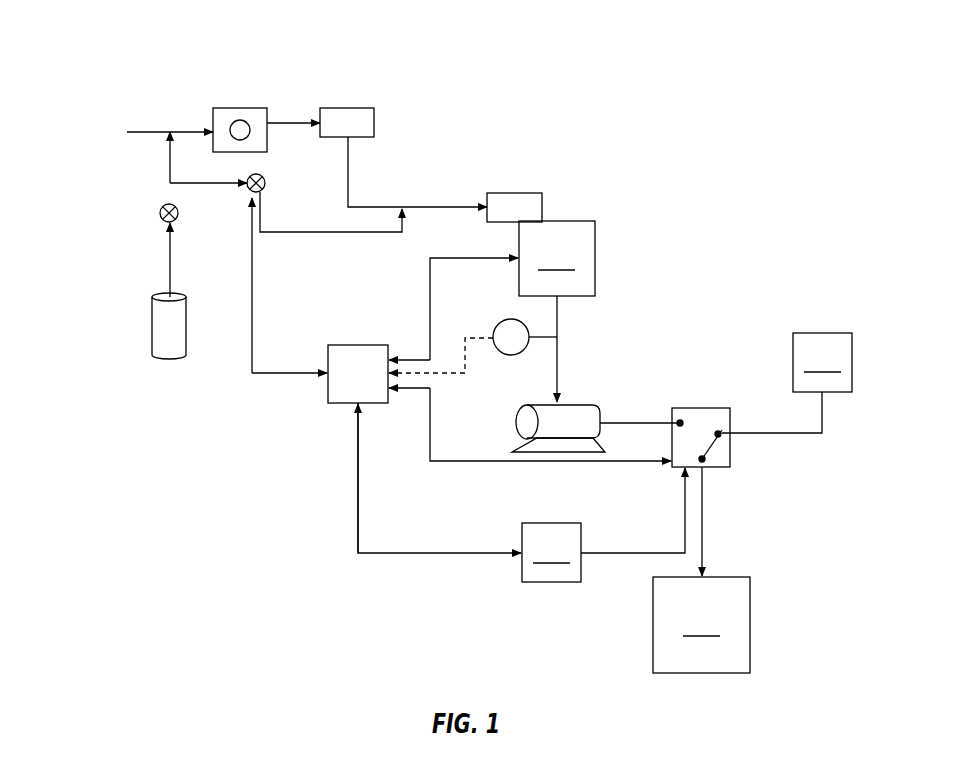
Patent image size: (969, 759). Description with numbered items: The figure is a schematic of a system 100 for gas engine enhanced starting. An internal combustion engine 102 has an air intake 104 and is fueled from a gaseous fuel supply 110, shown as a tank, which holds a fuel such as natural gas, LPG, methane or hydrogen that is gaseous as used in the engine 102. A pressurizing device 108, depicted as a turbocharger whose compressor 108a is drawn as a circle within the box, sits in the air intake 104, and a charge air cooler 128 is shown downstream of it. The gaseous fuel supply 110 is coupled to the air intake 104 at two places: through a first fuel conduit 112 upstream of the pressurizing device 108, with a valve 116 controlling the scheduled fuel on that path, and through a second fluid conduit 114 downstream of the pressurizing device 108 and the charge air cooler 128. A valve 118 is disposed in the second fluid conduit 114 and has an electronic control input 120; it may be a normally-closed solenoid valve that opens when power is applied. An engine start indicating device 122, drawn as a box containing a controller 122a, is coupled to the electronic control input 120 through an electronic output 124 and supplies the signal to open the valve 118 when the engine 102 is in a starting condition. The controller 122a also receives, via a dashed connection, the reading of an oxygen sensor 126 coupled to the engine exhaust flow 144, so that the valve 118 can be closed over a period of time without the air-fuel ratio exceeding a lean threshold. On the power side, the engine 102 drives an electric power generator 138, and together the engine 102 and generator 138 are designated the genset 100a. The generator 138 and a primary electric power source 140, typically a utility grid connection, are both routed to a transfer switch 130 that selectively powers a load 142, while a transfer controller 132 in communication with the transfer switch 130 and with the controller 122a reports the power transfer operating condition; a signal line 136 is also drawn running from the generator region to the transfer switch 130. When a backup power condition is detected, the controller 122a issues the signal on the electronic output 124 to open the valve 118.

The system 100 is at (170, 48).
The genset 100a is at (693, 90).
The internal combustion engine 102 is at (492, 276).
The air intake 104 is at (152, 132).
The pressurizing device 108 is at (217, 108).
The compressor 108a is at (241, 120).
The gaseous fuel supply 110 is at (152, 327).
The first fuel conduit 112 is at (168, 167).
The second fluid conduit 114 is at (213, 185).
The valve 116 is at (160, 212).
The valve 118 is at (262, 175).
The electronic control input 120 is at (246, 193).
The engine start indicating device 122 is at (328, 390).
The controller 122a is at (382, 386).
The electronic output 124 is at (328, 367).
The oxygen sensor 126 is at (511, 319).
The charge air cooler 128 is at (347, 108).
The transfer switch 130 is at (703, 408).
The transfer controller 132 is at (521, 492).
The sensor signal line 136 is at (490, 462).
The electric power generator 138 is at (577, 405).
The primary electric power source 140 is at (787, 383).
The load 142 is at (701, 570).
The engine exhaust flow 144 is at (558, 315).